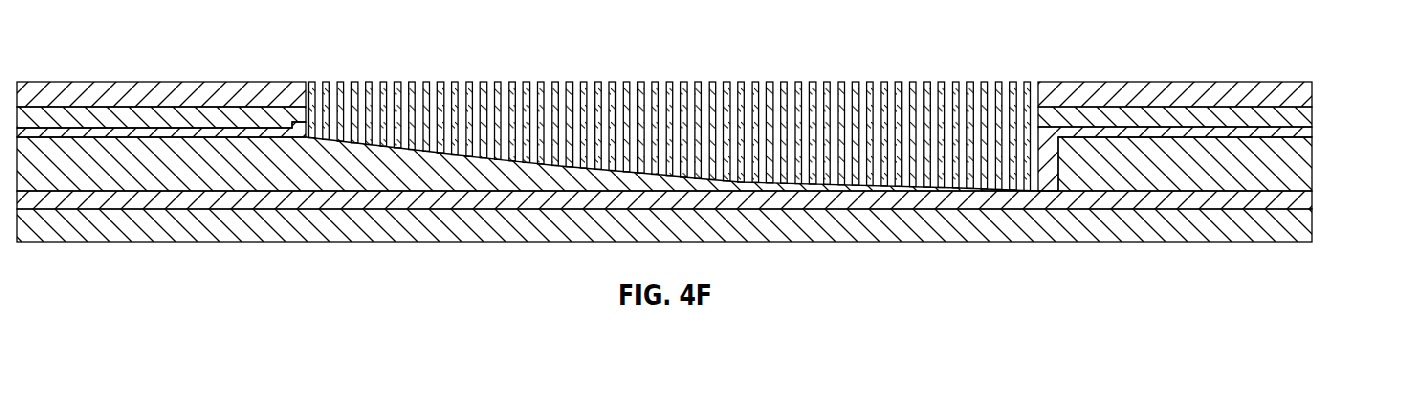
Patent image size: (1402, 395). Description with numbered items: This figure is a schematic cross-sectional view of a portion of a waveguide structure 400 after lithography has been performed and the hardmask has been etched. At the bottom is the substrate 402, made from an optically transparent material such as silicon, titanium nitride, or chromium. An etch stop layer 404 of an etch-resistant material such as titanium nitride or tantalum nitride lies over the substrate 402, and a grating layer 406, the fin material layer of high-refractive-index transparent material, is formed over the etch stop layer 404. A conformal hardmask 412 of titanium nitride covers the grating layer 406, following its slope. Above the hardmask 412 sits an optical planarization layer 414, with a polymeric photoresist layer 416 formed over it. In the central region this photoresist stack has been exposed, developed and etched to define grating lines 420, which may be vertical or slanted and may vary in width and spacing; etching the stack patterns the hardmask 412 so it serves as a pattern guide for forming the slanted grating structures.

The waveguide structure 400 is at (134, 29).
The substrate 402 is at (1302, 227).
The etch stop layer 404 is at (1302, 195).
The grating layer 406 is at (1302, 178).
The conformal hardmask 412 is at (1300, 135).
The optical planarization layer 414 is at (1255, 118).
The photoresist layer 416 is at (1300, 97).
The grating lines 420 is at (477, 74).